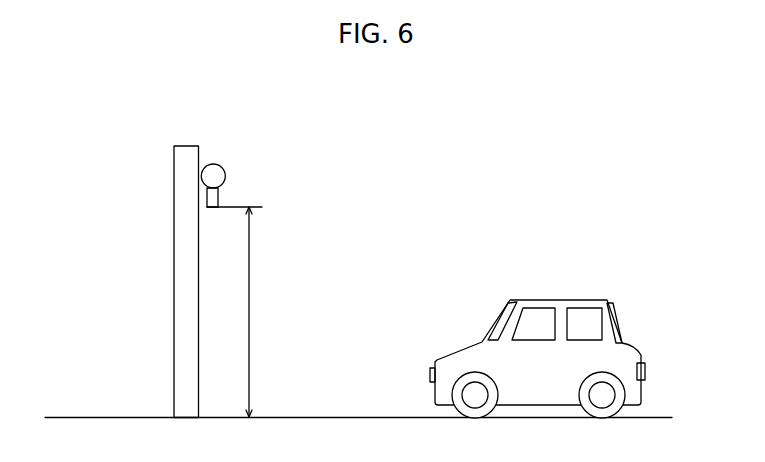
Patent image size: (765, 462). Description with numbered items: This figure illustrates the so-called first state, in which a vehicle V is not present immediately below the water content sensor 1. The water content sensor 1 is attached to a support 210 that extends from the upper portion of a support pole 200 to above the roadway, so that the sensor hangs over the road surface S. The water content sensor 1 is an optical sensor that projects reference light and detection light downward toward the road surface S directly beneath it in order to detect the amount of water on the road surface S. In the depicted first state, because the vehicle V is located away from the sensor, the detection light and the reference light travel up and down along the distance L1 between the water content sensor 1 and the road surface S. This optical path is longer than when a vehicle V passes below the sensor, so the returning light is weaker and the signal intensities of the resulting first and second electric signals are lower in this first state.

The water content sensor 1 is at (190, 183).
The support pole 200 is at (188, 232).
The support 210 is at (203, 177).
The distance L1 is at (262, 312).
The road surface S is at (104, 417).
The vehicle V is at (622, 357).